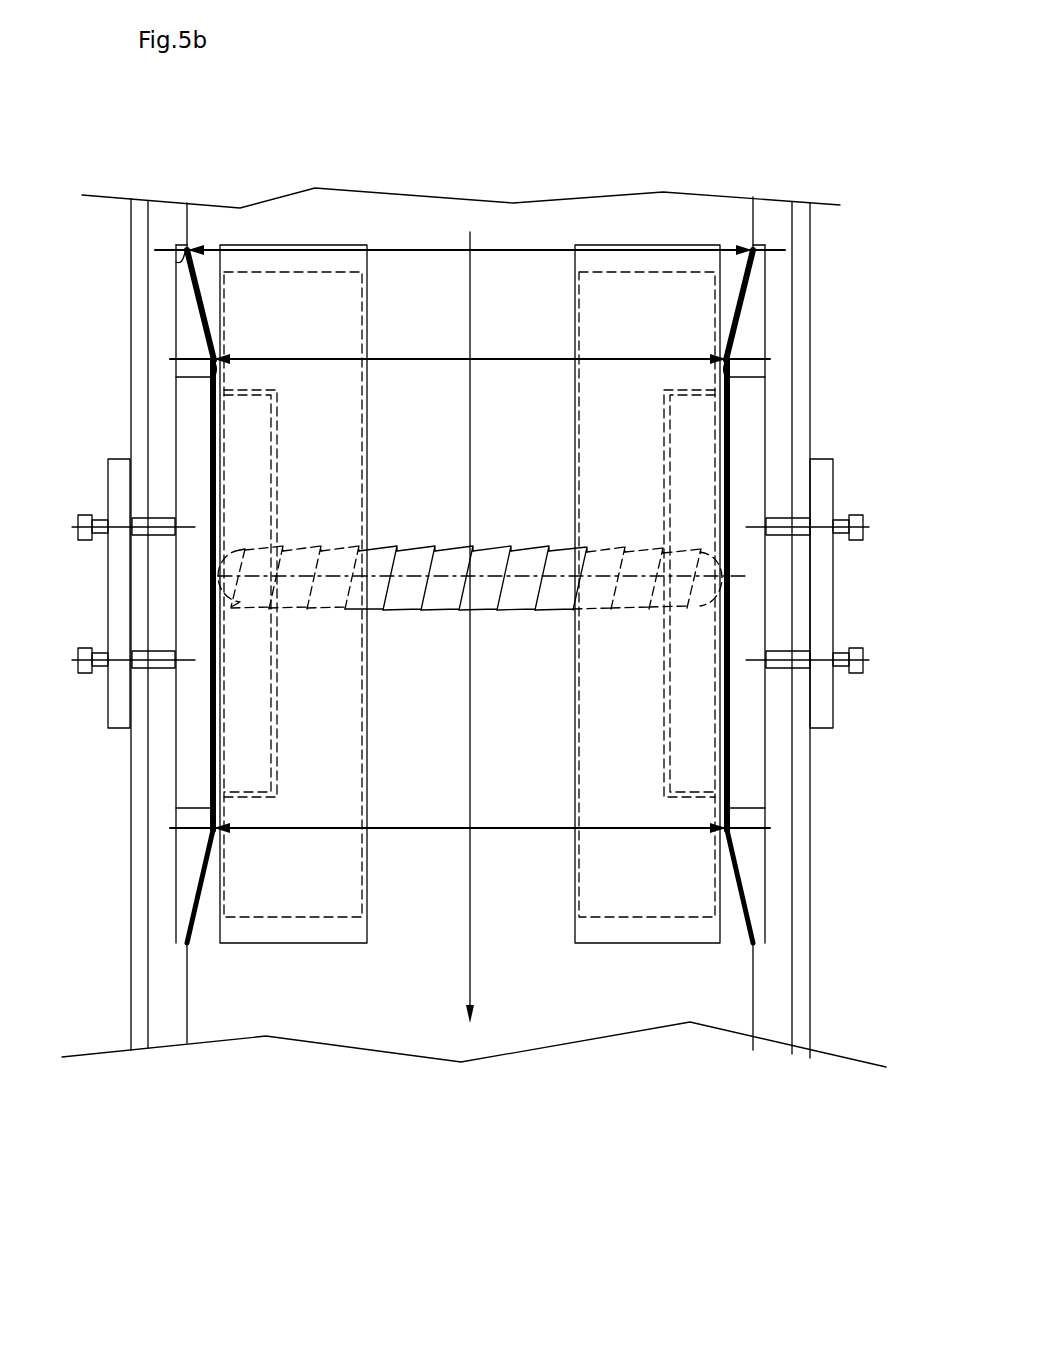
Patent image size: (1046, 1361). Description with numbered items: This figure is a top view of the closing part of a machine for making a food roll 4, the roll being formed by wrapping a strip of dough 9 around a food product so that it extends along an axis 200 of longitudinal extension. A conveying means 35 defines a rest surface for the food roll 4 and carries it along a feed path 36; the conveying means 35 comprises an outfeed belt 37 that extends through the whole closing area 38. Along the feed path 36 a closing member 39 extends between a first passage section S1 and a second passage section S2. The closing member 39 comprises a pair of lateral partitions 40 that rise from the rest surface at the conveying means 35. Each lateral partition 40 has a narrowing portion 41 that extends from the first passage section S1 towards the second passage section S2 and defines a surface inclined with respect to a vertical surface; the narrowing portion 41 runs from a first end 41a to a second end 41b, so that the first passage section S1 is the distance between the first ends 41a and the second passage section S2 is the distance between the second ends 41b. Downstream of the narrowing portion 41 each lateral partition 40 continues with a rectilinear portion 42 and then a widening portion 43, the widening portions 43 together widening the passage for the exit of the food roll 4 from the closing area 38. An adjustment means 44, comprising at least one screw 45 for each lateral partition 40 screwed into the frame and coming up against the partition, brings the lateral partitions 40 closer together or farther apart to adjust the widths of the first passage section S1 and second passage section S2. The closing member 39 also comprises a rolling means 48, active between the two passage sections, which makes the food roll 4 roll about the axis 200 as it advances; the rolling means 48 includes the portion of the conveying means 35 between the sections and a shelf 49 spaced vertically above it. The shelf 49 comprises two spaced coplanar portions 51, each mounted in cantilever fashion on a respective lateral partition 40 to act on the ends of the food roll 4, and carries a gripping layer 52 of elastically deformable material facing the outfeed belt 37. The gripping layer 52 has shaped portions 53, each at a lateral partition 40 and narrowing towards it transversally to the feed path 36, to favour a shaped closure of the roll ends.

The food roll 4 is at (484, 569).
The strip of dough 9 is at (522, 595).
The axis of extension 200 is at (455, 575).
The conveying means 35 is at (437, 1080).
The feed path 36 is at (470, 945).
The outfeed belt 37 is at (340, 1017).
The closing area 38 is at (70, 643).
The closing member 39 is at (163, 338).
The lateral partition 40 is at (175, 435).
The narrowing portion 41 is at (190, 312).
The first end 41a is at (176, 262).
The second end 41b is at (190, 371).
The rectilinear portion 42 is at (192, 587).
The widening portion 43 is at (187, 858).
The adjustment means 44 is at (93, 603).
The screw 45 is at (92, 515).
The rolling means 48 is at (360, 947).
The shelf 49 is at (596, 947).
The coplanar portion 51 is at (250, 943).
The gripping layer 52 is at (296, 935).
The shaped portion 53 is at (245, 727).
The first passage section S1 is at (670, 250).
The second passage section S2 is at (650, 357).